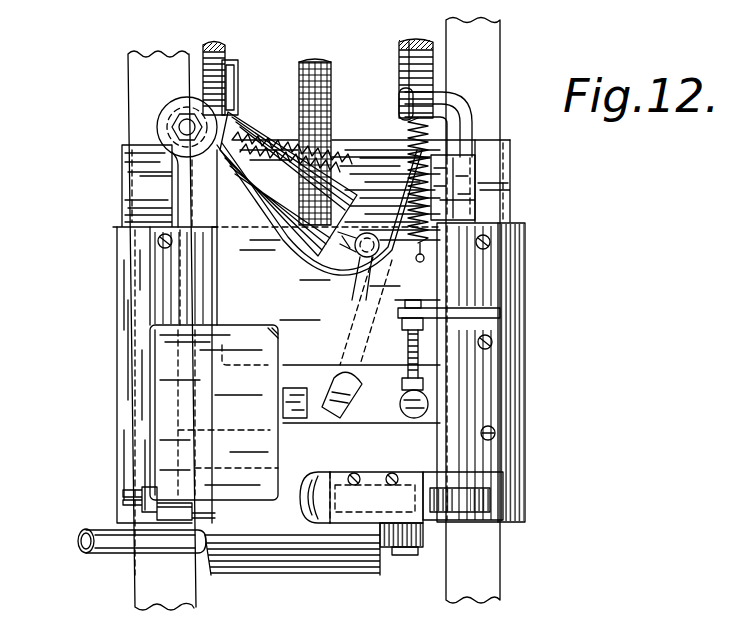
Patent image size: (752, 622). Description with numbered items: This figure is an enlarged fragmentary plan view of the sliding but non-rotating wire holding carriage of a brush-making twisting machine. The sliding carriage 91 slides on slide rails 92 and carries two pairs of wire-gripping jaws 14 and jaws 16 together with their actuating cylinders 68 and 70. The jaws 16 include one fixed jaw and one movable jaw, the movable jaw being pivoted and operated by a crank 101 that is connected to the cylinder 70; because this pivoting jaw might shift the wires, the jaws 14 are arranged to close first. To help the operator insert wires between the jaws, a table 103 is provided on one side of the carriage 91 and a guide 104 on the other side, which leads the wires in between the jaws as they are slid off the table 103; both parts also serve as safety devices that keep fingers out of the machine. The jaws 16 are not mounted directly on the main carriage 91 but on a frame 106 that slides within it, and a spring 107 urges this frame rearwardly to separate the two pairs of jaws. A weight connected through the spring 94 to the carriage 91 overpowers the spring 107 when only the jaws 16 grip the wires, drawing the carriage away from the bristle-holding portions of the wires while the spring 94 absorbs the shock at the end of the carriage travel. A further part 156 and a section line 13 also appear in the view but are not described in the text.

The actuating cylinder 70 is at (263, 147).
The spring 94 is at (332, 88).
The spring 107 is at (408, 136).
The frame 106 is at (463, 211).
The sliding carriage 91 is at (522, 327).
The crank 101 is at (364, 265).
The adjusting bolt with ball 156 is at (408, 350).
The jaws 16 is at (283, 388).
The table 103 is at (168, 402).
The jaws 14 is at (334, 474).
The guide 104 is at (370, 480).
The actuating cylinder 68 is at (322, 564).
The slide rails 92 is at (503, 598).
The section line 13 is at (76, 592).